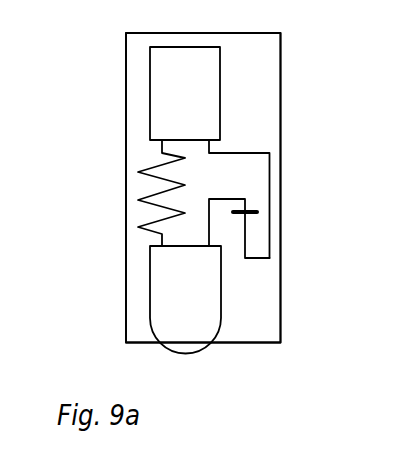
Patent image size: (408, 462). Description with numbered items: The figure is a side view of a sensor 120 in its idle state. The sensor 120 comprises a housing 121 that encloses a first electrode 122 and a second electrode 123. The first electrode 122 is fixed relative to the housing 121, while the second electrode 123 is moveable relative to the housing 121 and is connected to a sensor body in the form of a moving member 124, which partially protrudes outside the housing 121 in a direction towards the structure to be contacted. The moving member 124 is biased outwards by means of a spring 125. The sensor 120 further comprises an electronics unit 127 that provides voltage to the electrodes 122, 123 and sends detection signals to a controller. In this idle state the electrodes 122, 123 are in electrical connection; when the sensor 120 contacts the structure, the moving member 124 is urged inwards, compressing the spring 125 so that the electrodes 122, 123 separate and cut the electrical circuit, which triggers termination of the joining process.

The sensor 120 is at (280, 80).
The housing 121 is at (281, 281).
The first electrode 122 is at (247, 247).
The second electrode 123 is at (245, 203).
The moving member 124 is at (206, 322).
The spring 125 is at (156, 178).
The electronics unit 127 is at (152, 76).